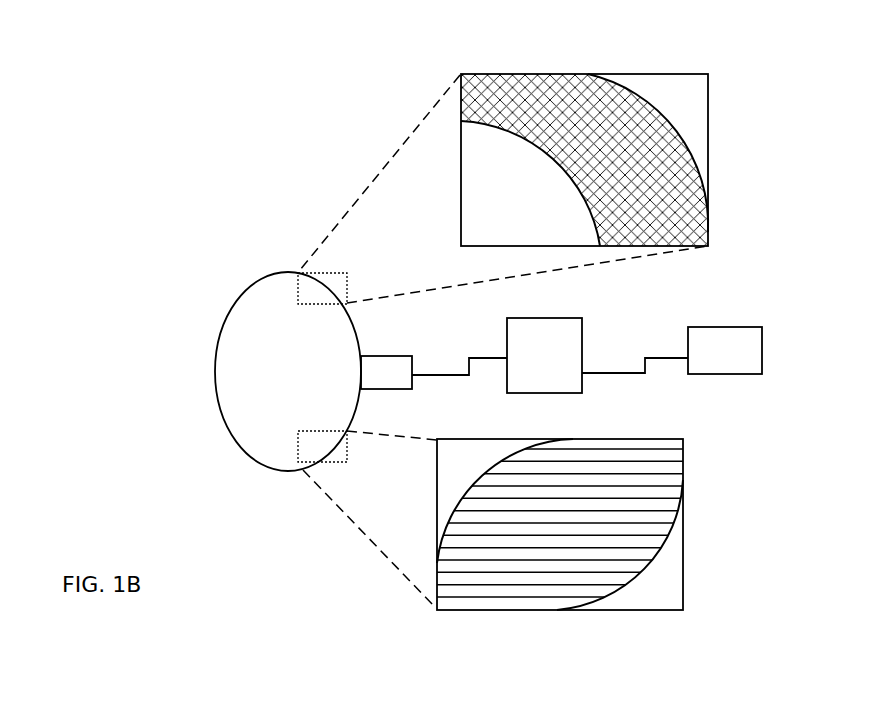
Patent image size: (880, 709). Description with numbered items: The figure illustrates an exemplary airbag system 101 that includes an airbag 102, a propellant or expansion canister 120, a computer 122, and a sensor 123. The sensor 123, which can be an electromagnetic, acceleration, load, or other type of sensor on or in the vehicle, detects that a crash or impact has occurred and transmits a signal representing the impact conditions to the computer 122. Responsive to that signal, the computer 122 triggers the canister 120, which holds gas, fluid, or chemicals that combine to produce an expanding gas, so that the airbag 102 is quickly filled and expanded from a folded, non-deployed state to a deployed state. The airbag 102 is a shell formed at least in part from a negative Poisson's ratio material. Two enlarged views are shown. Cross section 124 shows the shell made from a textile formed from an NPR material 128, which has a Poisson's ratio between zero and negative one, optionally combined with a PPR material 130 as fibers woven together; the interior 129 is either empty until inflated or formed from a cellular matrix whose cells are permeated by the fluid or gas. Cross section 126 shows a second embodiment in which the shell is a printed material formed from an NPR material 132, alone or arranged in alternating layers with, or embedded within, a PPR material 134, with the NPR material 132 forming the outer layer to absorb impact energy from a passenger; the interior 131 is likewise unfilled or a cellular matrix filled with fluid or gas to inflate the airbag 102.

The airbag system 101 is at (242, 102).
The airbag 102 is at (240, 324).
The expansion canister 120 is at (397, 357).
The computer 122 is at (582, 340).
The sensor 123 is at (757, 327).
The cross section 124 is at (650, 246).
The cross section 126 is at (453, 610).
The NPR material 128 is at (550, 97).
The interior 129 is at (477, 222).
The PPR material 130 is at (535, 83).
The interior 131 is at (497, 460).
The NPR material 132 is at (625, 463).
The PPR material 134 is at (650, 492).